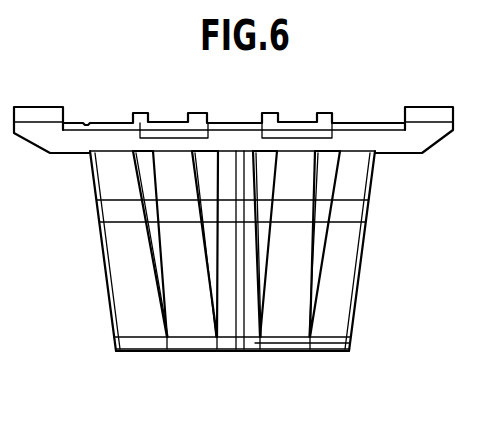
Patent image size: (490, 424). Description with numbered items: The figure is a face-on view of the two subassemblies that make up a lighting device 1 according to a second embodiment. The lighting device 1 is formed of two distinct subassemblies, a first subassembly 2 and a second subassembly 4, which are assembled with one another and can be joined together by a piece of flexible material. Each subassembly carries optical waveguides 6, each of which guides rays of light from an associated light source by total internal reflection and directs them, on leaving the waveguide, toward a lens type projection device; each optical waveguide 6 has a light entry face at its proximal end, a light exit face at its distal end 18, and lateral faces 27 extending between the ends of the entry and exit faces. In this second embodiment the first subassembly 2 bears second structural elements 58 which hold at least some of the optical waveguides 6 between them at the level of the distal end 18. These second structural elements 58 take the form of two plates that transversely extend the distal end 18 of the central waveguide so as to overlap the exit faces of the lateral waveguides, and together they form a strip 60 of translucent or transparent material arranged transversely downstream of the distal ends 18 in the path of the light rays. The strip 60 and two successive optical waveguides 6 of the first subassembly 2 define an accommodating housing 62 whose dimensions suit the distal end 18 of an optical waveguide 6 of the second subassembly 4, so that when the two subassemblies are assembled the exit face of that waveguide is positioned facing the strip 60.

The lighting device 1 is at (98, 295).
The first subassembly 2 is at (371, 252).
The second subassembly 4 is at (321, 170).
The optical waveguide 6 is at (128, 262).
The distal end 18 is at (282, 336).
The lateral faces 27 is at (210, 202).
The second structural elements 58 is at (295, 356).
The strip 60 is at (200, 348).
The accommodating housing 62 is at (181, 339).